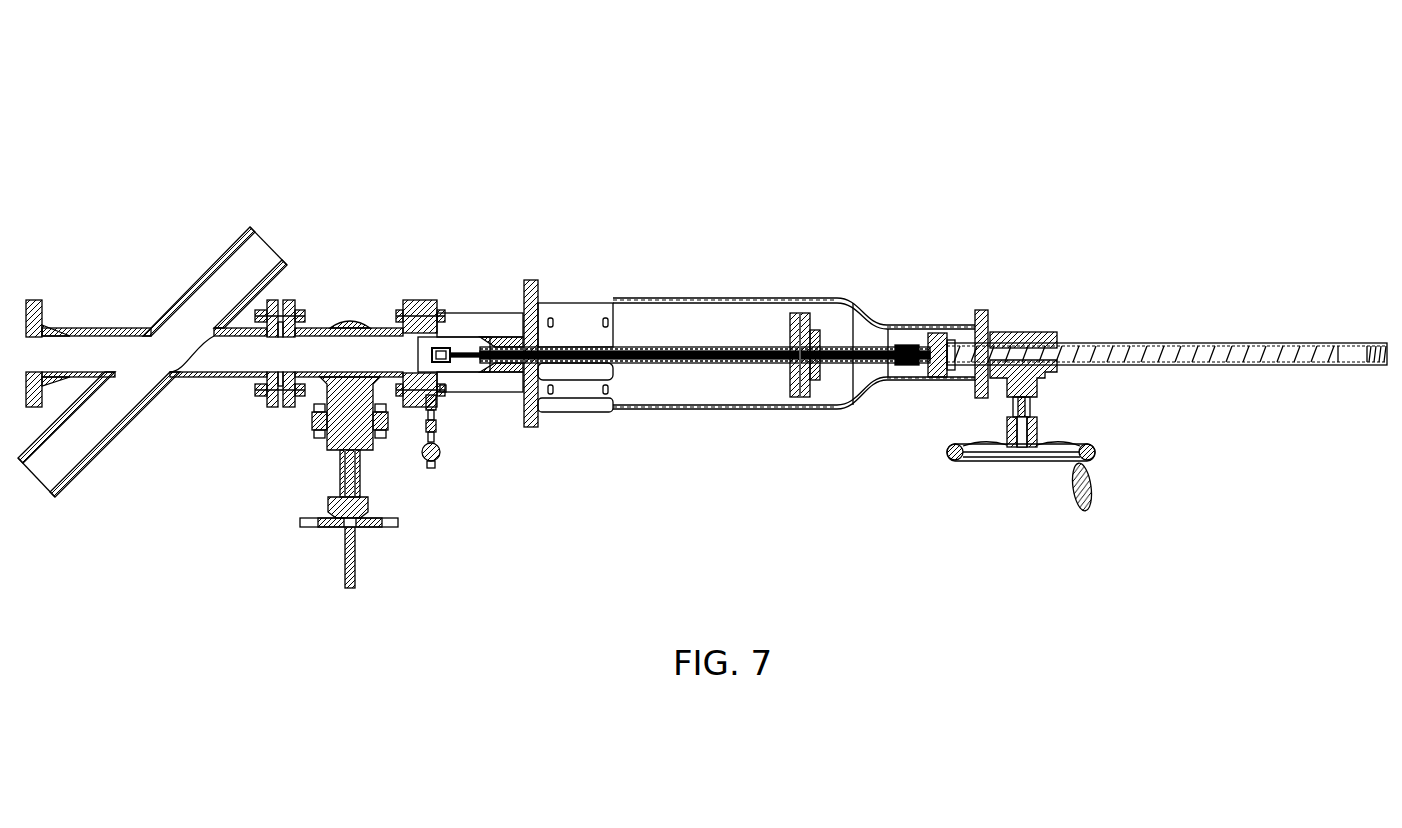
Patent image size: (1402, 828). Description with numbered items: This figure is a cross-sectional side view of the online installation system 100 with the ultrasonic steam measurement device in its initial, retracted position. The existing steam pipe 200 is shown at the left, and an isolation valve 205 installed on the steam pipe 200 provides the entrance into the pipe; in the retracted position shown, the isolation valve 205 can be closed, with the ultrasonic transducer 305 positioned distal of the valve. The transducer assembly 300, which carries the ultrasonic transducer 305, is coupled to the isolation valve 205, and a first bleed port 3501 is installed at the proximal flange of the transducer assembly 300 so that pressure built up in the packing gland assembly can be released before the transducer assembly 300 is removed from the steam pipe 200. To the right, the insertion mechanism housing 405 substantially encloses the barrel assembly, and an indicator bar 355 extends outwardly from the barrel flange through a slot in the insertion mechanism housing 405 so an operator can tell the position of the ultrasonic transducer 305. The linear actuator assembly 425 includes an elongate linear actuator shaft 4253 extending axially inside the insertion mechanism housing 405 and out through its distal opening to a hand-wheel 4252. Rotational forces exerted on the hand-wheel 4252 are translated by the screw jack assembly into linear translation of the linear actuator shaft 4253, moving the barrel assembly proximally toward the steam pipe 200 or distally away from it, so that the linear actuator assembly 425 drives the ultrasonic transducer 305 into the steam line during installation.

The online installation system 100 is at (1152, 130).
The steam pipe 200 is at (250, 222).
The isolation valve 205 is at (348, 313).
The transducer assembly 300 is at (472, 402).
The ultrasonic transducer 305 is at (445, 343).
The first bleed port 3501 is at (430, 475).
The indicator bar 355 is at (810, 410).
The insertion mechanism housing 405 is at (810, 297).
The linear actuator assembly 425 is at (1048, 330).
The hand-wheel 4252 is at (987, 468).
The linear actuator shaft 4253 is at (953, 338).